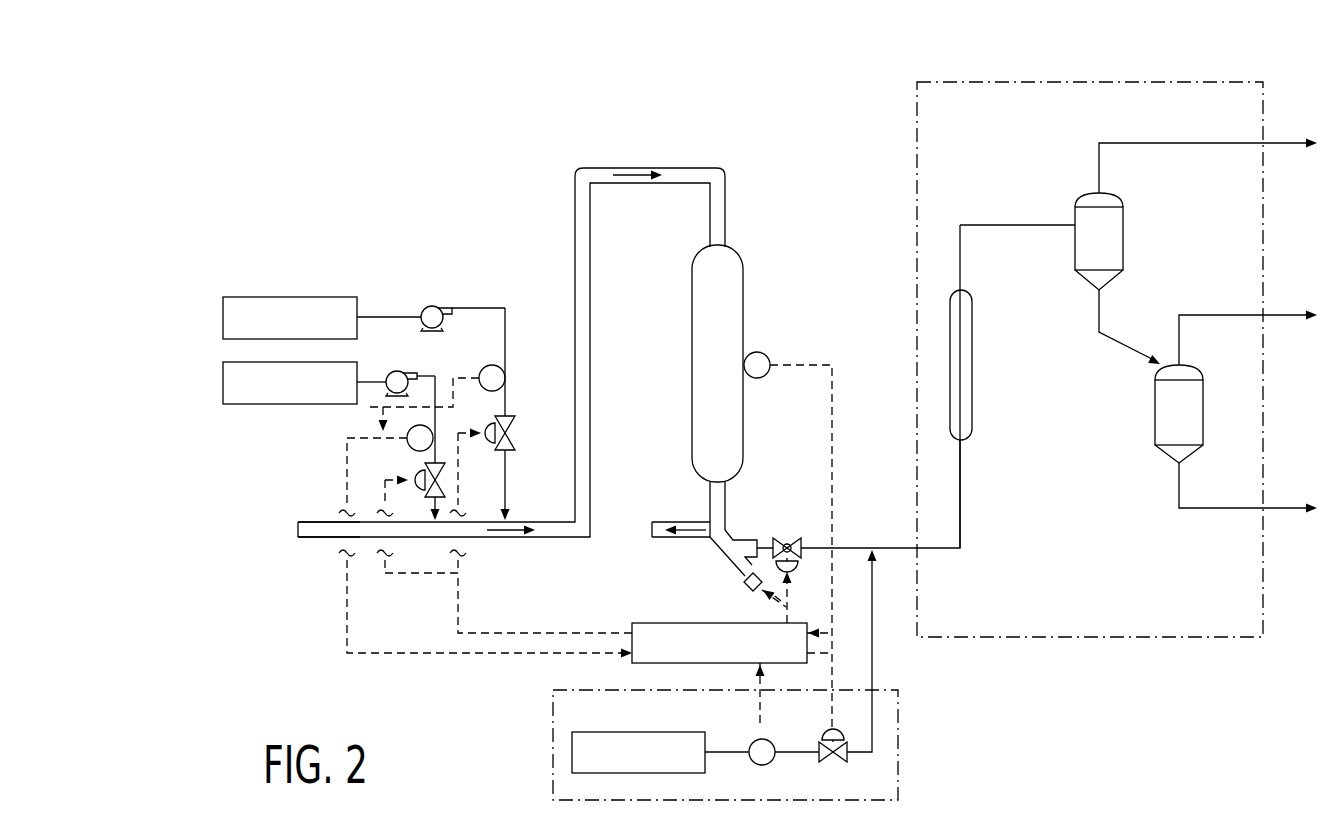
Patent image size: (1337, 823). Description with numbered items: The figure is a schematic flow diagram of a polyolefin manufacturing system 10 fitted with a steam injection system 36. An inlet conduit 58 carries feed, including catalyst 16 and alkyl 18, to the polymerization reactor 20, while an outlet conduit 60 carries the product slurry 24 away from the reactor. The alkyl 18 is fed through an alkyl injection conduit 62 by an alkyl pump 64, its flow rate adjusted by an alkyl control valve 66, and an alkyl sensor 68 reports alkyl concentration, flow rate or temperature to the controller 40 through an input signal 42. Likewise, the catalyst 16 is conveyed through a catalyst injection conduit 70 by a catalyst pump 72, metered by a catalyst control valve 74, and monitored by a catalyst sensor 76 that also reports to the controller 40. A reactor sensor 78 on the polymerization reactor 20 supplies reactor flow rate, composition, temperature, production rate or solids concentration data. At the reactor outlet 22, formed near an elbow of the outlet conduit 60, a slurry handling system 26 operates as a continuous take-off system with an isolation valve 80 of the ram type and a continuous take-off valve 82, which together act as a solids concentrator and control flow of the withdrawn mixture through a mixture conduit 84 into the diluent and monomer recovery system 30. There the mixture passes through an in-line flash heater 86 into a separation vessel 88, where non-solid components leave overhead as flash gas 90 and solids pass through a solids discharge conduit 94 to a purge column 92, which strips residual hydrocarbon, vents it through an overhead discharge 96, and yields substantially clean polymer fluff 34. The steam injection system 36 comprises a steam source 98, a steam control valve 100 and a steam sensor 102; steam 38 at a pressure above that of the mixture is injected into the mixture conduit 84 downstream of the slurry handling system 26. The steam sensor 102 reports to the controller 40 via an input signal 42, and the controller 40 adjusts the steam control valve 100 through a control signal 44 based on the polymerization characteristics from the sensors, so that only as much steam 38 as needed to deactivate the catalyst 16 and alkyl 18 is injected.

The manufacturing system 10 is at (781, 147).
The catalyst 16 is at (223, 318).
The alkyl 18 is at (223, 383).
The polymerization reactor 20 is at (692, 366).
The outlet 22 is at (728, 532).
The product slurry 24 is at (508, 540).
The slurry handling system 26 is at (774, 516).
The diluent and monomer recovery system 30 is at (1085, 82).
The polymer fluff 34 is at (1279, 510).
The steam injection system 36 is at (899, 745).
The steam 38 is at (873, 660).
The controller 40 is at (677, 622).
The input signal 42 is at (430, 652).
The control signal 44 is at (458, 592).
The inlet conduit 58 is at (321, 540).
The outlet conduit 60 is at (666, 540).
The alkyl injection conduit 62 is at (438, 503).
The alkyl pump 64 is at (398, 370).
The alkyl control valve 66 is at (414, 474).
The alkyl sensor 68 is at (409, 429).
The catalyst injection conduit 70 is at (506, 488).
The catalyst pump 72 is at (434, 306).
The catalyst control valve 74 is at (515, 436).
The catalyst sensor 76 is at (503, 366).
The reactor sensor 78 is at (768, 353).
The isolation valve 80 is at (719, 548).
The continuous take-off valve 82 is at (790, 537).
The mixture conduit 84 is at (848, 548).
The in-line flash heater 86 is at (973, 378).
The separation vessel 88 is at (1124, 244).
The flash gas 90 is at (1277, 145).
The purge column 92 is at (1155, 412).
The solids discharge conduit 94 is at (1098, 310).
The overhead discharge 96 is at (1279, 318).
The steam source 98 is at (670, 732).
The steam control valve 100 is at (836, 766).
The steam sensor 102 is at (775, 745).